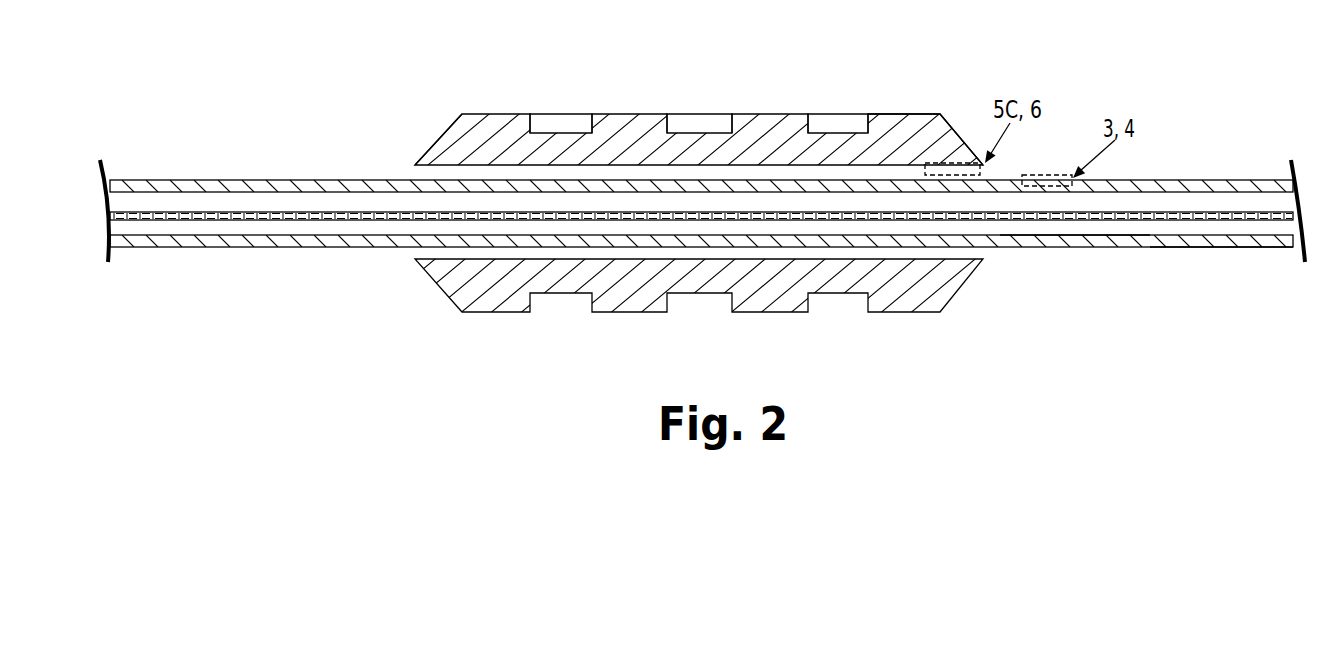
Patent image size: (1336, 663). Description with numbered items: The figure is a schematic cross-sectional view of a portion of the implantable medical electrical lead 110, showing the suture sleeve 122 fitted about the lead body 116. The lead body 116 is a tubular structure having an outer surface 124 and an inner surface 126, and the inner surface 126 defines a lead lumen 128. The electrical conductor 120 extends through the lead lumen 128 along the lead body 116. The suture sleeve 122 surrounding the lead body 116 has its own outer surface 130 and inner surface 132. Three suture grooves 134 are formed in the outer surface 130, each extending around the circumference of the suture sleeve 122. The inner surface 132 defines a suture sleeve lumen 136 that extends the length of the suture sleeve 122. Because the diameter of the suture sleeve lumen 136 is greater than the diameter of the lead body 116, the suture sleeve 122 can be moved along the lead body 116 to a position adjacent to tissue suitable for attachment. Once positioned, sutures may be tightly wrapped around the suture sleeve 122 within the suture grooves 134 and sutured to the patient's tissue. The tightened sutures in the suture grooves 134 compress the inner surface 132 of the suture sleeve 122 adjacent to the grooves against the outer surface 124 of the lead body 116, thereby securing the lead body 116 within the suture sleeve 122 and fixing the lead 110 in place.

The implantable medical electrical lead 110 is at (190, 170).
The lead body 116 is at (1198, 258).
The electrical conductor 120 is at (325, 213).
The suture sleeve 122 is at (474, 106).
The outer surface 124 is at (1163, 180).
The inner surface 126 is at (1147, 228).
The lead lumen 128 is at (1078, 225).
The outer surface 130 is at (917, 113).
The inner surface 132 is at (410, 168).
The suture groove 134 is at (571, 115).
The suture sleeve lumen 136 is at (428, 251).